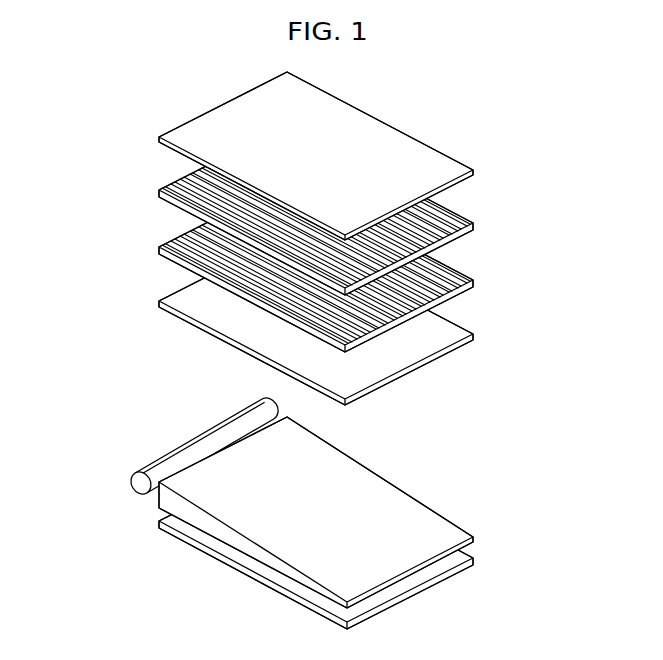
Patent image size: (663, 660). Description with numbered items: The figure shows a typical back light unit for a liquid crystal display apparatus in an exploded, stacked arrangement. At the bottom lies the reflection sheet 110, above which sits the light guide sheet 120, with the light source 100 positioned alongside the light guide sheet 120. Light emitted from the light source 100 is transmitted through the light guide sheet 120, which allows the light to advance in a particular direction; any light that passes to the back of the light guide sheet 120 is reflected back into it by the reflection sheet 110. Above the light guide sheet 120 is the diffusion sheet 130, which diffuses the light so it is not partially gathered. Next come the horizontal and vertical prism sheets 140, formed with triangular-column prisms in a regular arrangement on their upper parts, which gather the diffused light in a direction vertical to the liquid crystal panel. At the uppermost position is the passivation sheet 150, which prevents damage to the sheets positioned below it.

The light source 100 is at (130, 487).
The reflection sheet 110 is at (450, 563).
The light guide sheet 120 is at (432, 517).
The diffusion sheet 130 is at (473, 338).
The prism sheet 140 is at (472, 282).
The passivation sheet 150 is at (473, 175).